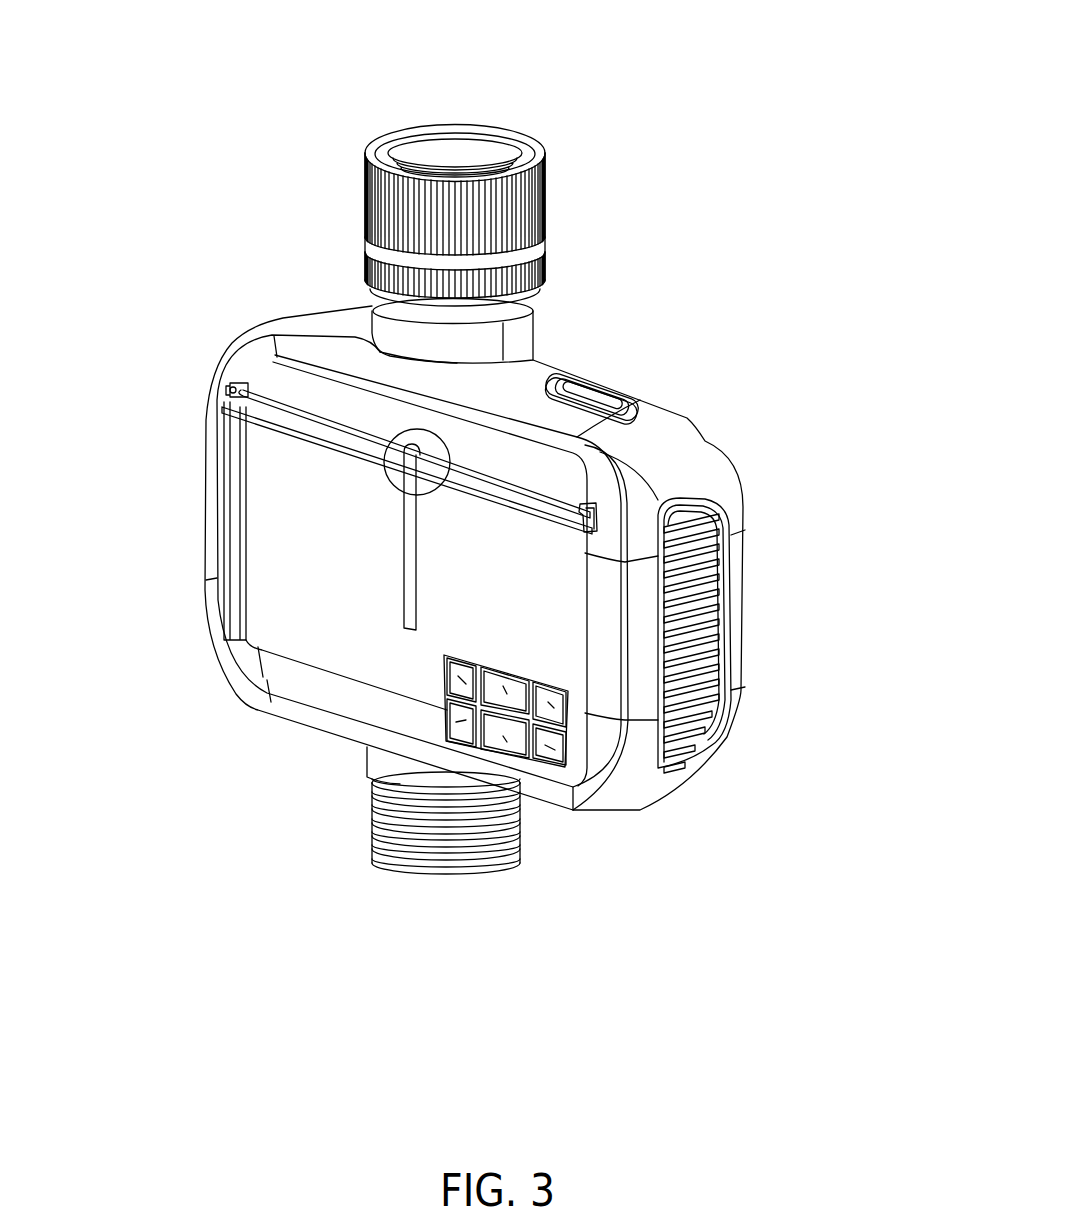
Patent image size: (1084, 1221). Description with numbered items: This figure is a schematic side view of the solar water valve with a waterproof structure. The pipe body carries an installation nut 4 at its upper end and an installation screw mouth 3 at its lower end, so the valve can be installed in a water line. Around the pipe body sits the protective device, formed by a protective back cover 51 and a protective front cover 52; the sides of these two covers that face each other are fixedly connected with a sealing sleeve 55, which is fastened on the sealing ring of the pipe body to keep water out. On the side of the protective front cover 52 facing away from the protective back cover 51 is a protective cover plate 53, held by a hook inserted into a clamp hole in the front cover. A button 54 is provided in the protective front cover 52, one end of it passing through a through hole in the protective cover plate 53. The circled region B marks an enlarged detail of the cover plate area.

The installation screw mouth 3 is at (455, 833).
The installation nut 4 is at (513, 210).
The protective back cover 51 is at (702, 445).
The protective front cover 52 is at (240, 352).
The protective cover plate 53 is at (310, 627).
The button 54 is at (561, 712).
The sealing sleeve 55 is at (370, 318).
The detail region B is at (445, 435).